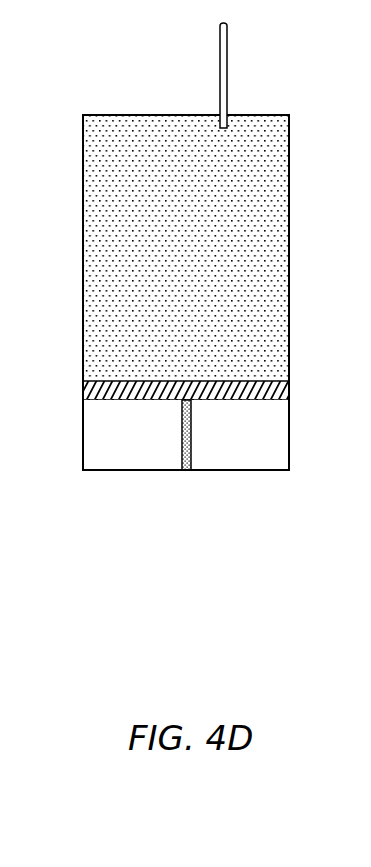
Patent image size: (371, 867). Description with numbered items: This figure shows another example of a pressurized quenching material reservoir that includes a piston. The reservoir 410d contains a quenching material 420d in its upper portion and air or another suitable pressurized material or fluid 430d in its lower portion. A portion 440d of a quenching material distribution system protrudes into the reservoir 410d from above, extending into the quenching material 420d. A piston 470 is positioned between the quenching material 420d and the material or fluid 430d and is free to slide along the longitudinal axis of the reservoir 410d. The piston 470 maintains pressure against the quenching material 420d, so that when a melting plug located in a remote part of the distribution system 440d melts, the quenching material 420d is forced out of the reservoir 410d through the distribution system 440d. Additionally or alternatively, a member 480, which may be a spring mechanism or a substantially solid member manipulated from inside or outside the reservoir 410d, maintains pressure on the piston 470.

The reservoir 410d is at (145, 114).
The quenching material 420d is at (128, 255).
The pressurized material or fluid 430d is at (255, 432).
The portion of quenching material distribution system 440d is at (221, 63).
The piston 470 is at (100, 390).
The member 480 is at (187, 467).